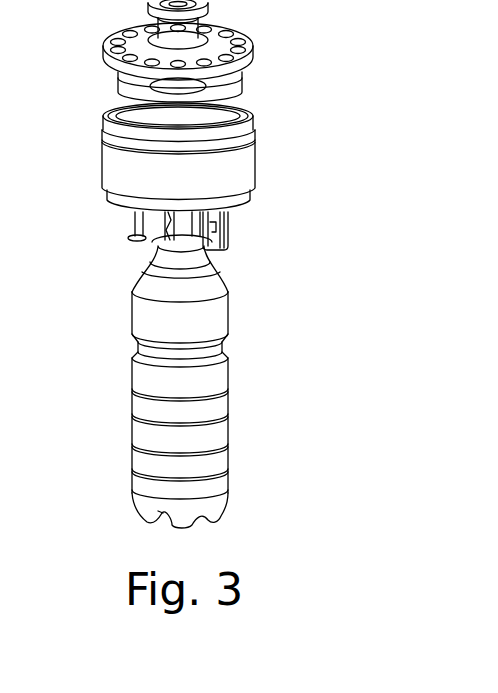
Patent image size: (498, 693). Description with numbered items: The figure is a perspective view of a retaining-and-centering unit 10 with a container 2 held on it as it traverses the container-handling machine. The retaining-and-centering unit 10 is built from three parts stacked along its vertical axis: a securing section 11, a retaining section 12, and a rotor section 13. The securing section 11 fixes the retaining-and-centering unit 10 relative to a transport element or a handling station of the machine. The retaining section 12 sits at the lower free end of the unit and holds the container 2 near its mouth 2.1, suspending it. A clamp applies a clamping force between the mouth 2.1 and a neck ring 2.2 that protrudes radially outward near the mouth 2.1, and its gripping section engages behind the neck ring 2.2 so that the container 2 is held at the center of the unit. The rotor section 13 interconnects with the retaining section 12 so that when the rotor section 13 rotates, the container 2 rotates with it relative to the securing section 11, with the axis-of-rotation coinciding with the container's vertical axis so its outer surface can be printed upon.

The retaining-and-centering unit 10 is at (308, 118).
The rotor section 13 is at (249, 38).
The securing section 11 is at (255, 152).
The retaining section 12 is at (229, 214).
The container 2 is at (234, 407).
The mouth 2.1 is at (210, 233).
The neck ring 2.2 is at (176, 248).